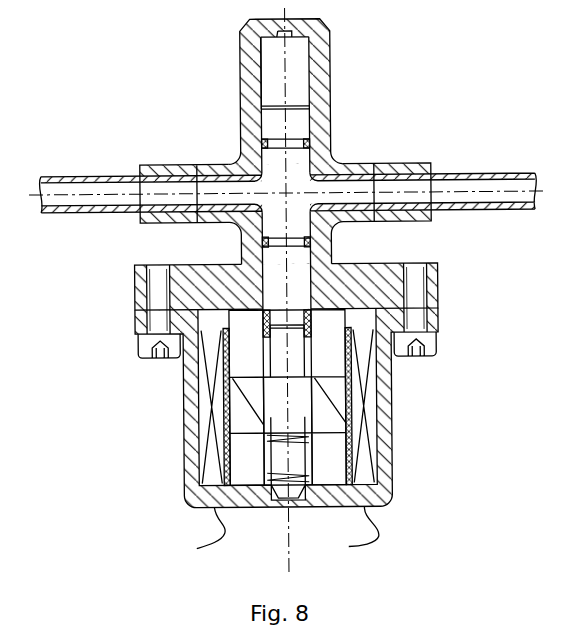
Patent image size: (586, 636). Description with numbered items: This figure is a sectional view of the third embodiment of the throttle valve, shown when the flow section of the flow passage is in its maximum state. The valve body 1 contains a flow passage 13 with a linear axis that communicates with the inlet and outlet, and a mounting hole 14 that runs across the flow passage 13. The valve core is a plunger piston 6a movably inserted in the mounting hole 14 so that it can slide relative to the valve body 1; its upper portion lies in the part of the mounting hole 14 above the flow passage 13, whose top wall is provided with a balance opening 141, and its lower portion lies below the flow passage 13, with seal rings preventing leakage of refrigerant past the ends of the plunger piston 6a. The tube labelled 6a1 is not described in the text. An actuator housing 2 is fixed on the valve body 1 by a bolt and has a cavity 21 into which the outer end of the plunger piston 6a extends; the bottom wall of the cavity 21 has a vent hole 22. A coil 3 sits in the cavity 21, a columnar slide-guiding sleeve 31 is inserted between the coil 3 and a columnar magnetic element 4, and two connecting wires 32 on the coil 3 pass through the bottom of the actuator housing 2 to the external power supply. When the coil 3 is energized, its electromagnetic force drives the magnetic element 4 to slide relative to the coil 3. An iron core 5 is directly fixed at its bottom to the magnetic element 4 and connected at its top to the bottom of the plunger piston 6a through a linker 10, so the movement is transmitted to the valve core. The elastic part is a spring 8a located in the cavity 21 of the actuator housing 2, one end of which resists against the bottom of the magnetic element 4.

The valve body 1 is at (314, 69).
The balance opening 141 is at (291, 29).
The mounting hole 14 is at (279, 51).
The flow passage 13 is at (216, 189).
The actuator housing 2 is at (193, 334).
The fluid passage tube 6a1 is at (312, 188).
The plunger piston 6a is at (299, 124).
The linker 10 is at (305, 328).
The coil 3 is at (362, 372).
The magnetic element 4 is at (248, 404).
The iron core 5 is at (267, 342).
The cavity 21 is at (250, 456).
The slide-guiding sleeve 31 is at (350, 443).
The spring 8a is at (350, 470).
The vent hole 22 is at (277, 490).
The connecting wires 32 is at (220, 534).